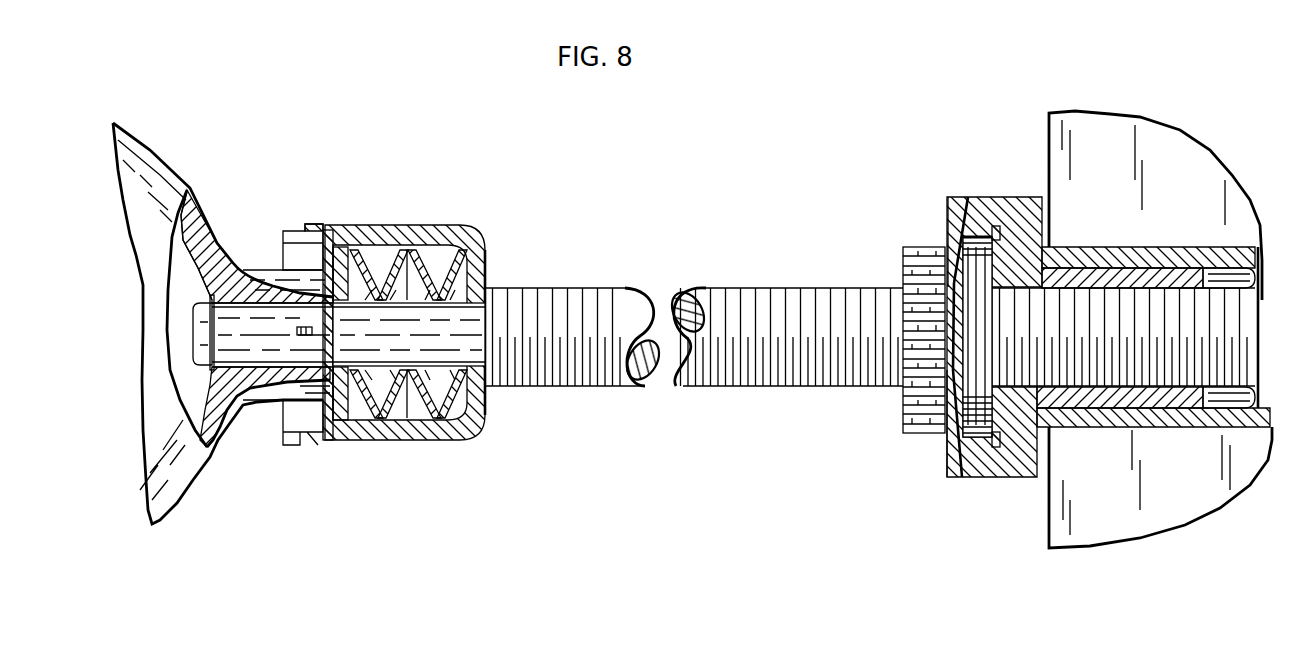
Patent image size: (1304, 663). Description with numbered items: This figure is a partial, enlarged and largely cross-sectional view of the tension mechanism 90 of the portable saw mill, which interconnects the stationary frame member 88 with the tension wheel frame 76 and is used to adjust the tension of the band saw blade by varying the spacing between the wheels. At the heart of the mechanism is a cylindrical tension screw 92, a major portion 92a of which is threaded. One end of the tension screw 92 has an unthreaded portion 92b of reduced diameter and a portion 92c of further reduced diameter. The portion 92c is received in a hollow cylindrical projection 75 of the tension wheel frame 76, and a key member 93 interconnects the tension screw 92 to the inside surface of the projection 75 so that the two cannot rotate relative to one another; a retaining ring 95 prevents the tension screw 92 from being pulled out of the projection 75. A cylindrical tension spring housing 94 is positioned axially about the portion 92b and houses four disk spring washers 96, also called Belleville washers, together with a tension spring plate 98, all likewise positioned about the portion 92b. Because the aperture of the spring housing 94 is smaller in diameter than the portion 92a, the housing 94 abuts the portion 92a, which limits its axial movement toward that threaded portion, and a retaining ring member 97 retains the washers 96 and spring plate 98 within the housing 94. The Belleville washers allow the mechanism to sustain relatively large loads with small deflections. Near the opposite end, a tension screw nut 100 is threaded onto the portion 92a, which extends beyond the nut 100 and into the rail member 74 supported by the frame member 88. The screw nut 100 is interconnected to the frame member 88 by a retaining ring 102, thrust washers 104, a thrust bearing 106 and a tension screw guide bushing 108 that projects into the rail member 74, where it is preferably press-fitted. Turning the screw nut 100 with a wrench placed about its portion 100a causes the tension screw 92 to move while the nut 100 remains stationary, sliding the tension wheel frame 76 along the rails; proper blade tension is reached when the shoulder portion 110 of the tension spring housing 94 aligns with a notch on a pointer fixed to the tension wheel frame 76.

The rail member 74 is at (1193, 410).
The hollow cylindrical projection 75 is at (232, 380).
The tension wheel frame 76 is at (130, 158).
The frame member 88 is at (1147, 517).
The tension mechanism 90 is at (770, 405).
The tension screw 92 is at (782, 300).
The threaded portion 92a is at (630, 303).
The portion of reduced diameter 92b is at (443, 323).
The portion of further reduced diameter 92c is at (272, 355).
The key member 93 is at (312, 332).
The tension spring housing 94 is at (448, 232).
The retaining ring 95 is at (205, 300).
The disk spring washers 96 is at (403, 262).
The retaining ring member 97 is at (325, 232).
The tension spring plate 98 is at (360, 228).
The tension screw nut 100 is at (978, 470).
The portion 100a is at (923, 262).
The retaining ring 102 is at (1000, 443).
The thrust washers 104 is at (952, 250).
The thrust bearing 106 is at (978, 237).
The tension screw guide bushing 108 is at (1112, 402).
The shoulder portion 110 is at (285, 231).